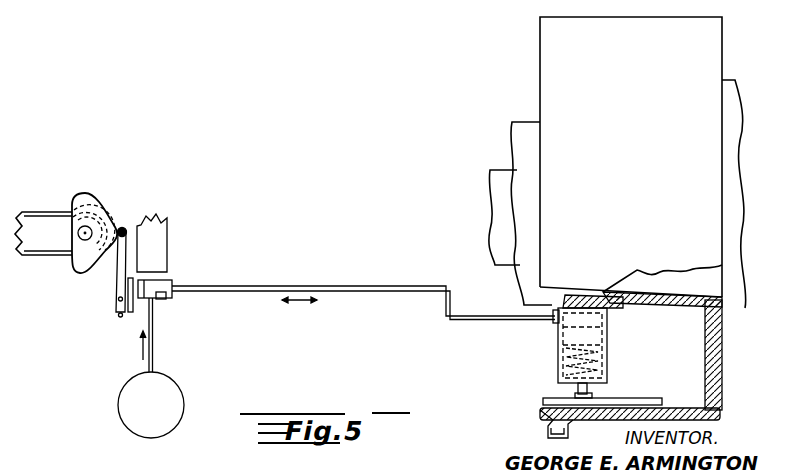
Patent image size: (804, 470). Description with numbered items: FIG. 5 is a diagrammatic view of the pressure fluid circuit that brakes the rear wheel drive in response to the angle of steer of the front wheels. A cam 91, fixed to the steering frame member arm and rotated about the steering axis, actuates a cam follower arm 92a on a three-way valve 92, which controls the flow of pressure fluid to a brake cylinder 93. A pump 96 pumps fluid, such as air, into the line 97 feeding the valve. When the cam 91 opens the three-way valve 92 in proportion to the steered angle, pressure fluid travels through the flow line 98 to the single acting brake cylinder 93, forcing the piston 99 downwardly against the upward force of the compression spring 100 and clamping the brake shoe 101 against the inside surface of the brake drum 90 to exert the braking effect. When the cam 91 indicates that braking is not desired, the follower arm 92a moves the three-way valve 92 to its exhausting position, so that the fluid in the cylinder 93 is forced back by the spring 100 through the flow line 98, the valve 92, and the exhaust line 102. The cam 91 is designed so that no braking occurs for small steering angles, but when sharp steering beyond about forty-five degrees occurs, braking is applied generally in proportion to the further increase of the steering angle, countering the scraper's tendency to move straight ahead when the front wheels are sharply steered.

The brake drum 90 is at (683, 408).
The cam 91 is at (103, 212).
The three-way valve 92 is at (170, 285).
The cam follower arm 92a is at (123, 257).
The brake cylinder 93 is at (607, 315).
The pump 96 is at (120, 418).
The line 97 is at (153, 340).
The flow line 98 is at (380, 291).
The piston 99 is at (595, 330).
The compression spring 100 is at (590, 362).
The brake shoe 101 is at (612, 402).
The exhaust line 102 is at (163, 298).